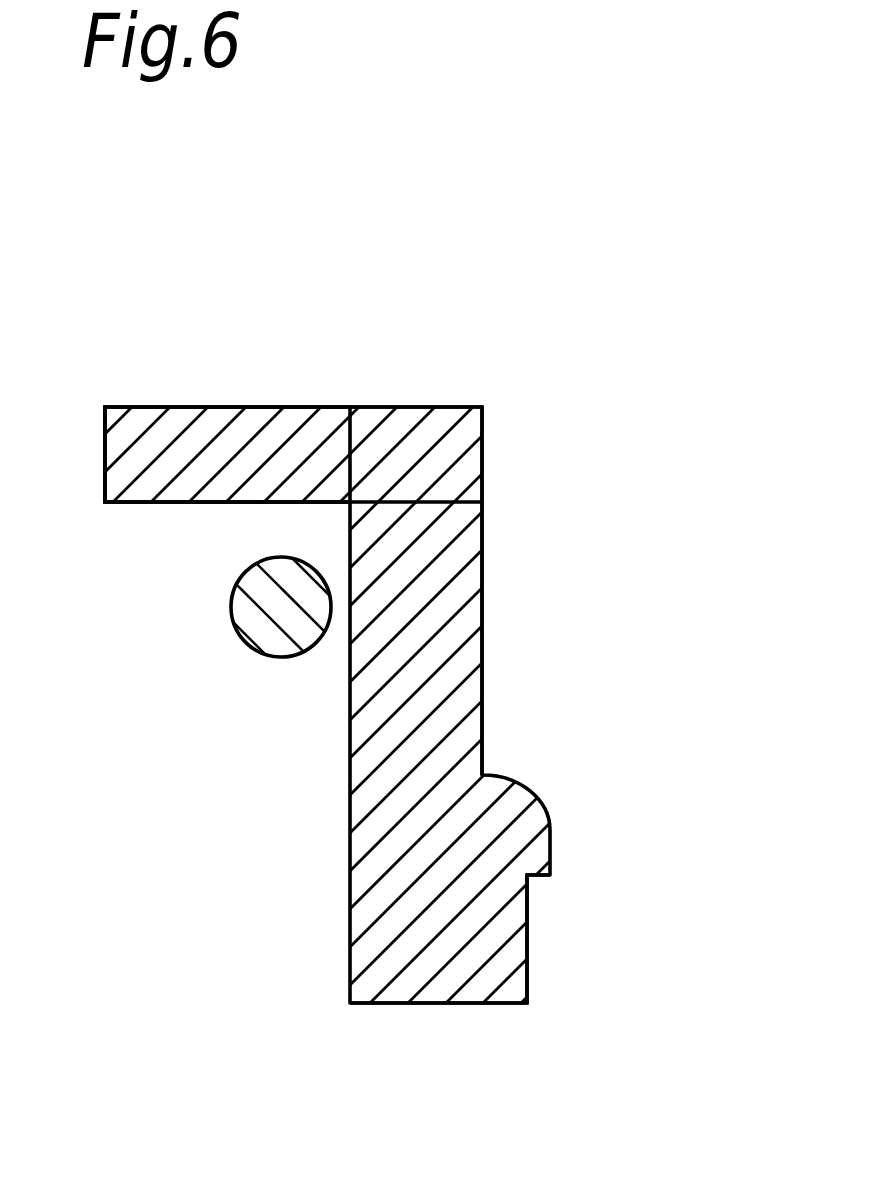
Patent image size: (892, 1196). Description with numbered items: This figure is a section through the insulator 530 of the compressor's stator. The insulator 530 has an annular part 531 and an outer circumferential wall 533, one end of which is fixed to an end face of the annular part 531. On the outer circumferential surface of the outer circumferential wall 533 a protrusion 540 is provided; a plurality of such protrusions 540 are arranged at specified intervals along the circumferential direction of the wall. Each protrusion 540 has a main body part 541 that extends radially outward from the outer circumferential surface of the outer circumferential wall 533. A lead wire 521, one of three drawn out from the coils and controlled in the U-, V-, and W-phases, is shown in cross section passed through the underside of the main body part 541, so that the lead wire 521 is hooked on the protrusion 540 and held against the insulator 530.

The insulator 530 is at (432, 368).
The annular part 531 is at (498, 930).
The outer circumferential wall 533 is at (470, 590).
The protrusion 540 is at (268, 418).
The main body part 541 is at (230, 432).
The lead wire 521 is at (270, 642).